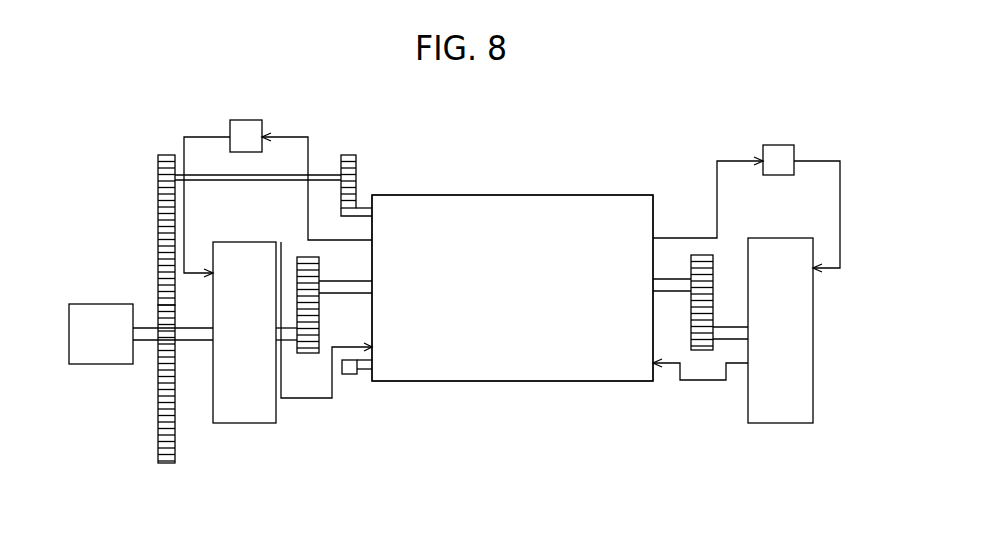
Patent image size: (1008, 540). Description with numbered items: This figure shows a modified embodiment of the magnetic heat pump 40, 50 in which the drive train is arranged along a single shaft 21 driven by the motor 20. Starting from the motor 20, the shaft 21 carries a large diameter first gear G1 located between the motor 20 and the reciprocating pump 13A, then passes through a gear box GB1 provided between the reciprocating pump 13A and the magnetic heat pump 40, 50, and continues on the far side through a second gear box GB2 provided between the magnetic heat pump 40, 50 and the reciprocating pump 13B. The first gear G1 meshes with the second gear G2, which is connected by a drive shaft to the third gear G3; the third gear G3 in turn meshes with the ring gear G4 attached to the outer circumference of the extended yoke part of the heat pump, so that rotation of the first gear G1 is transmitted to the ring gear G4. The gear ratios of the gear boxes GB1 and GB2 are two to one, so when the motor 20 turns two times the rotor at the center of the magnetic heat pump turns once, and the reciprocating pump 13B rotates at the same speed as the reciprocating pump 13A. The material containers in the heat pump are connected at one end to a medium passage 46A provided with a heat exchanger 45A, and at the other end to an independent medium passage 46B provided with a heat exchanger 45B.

The motor 20 is at (110, 364).
The shaft 21 is at (197, 340).
The reciprocating pump 13A is at (253, 423).
The reciprocating pump 13B is at (780, 423).
The magnetic heat pump 40 is at (547, 191).
The heat exchanger 50 is at (512, 288).
The heat exchanger 45A is at (230, 126).
The heat exchanger 45B is at (794, 153).
The medium passage 46A is at (323, 143).
The medium passage 46B is at (717, 210).
The first gear G1 is at (167, 463).
The second gear G2 is at (158, 180).
The third gear G3 is at (356, 178).
The ring gear G4 is at (349, 374).
The gear box GB1 is at (314, 422).
The gear box GB2 is at (700, 397).